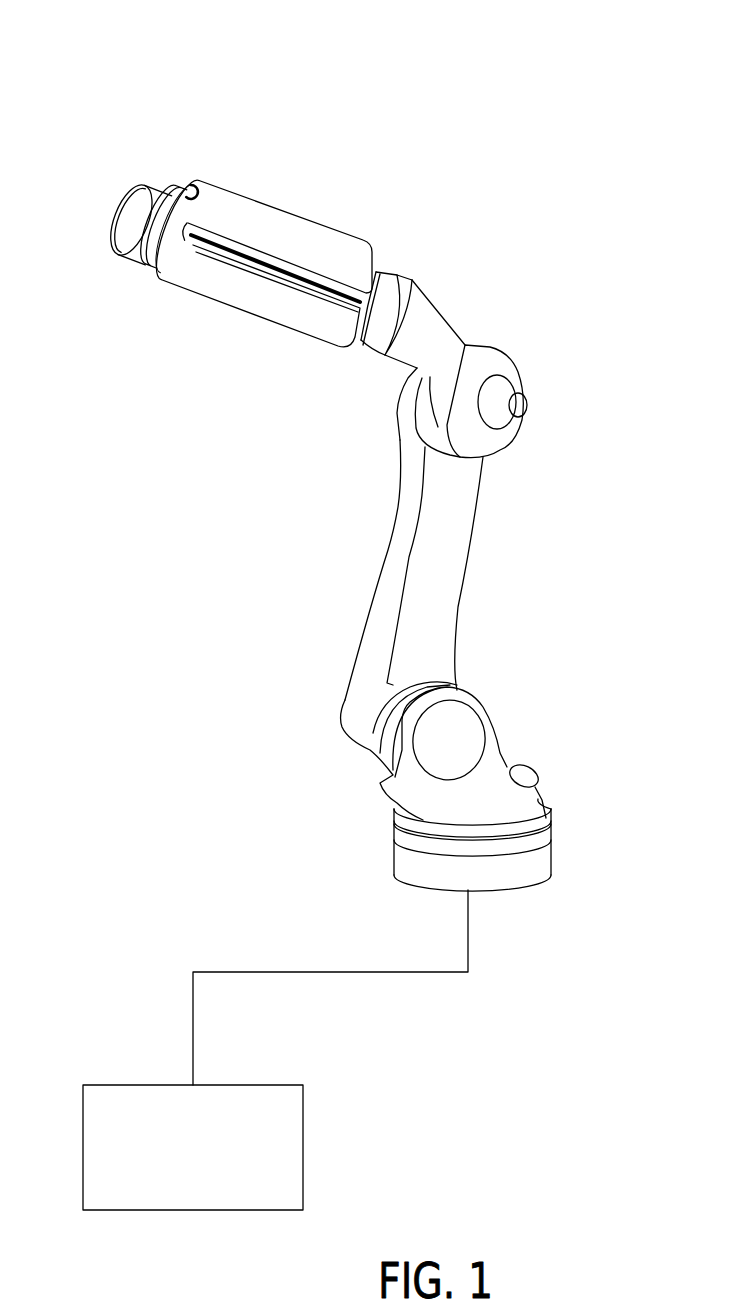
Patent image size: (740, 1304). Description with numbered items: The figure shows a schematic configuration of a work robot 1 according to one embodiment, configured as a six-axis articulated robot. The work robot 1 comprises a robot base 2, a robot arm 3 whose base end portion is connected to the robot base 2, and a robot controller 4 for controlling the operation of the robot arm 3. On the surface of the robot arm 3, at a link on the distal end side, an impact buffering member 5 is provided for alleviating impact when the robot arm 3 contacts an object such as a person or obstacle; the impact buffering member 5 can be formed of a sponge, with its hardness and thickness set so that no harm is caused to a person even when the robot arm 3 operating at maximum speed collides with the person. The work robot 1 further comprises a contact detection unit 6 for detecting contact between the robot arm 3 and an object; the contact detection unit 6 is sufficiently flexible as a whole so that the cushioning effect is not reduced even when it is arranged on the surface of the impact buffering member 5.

The work robot 1 is at (343, 132).
The robot base 2 is at (527, 767).
The robot arm 3 is at (482, 357).
The robot controller 4 is at (303, 1155).
The impact buffering member 5 is at (181, 193).
The contact detection unit 6 is at (230, 200).